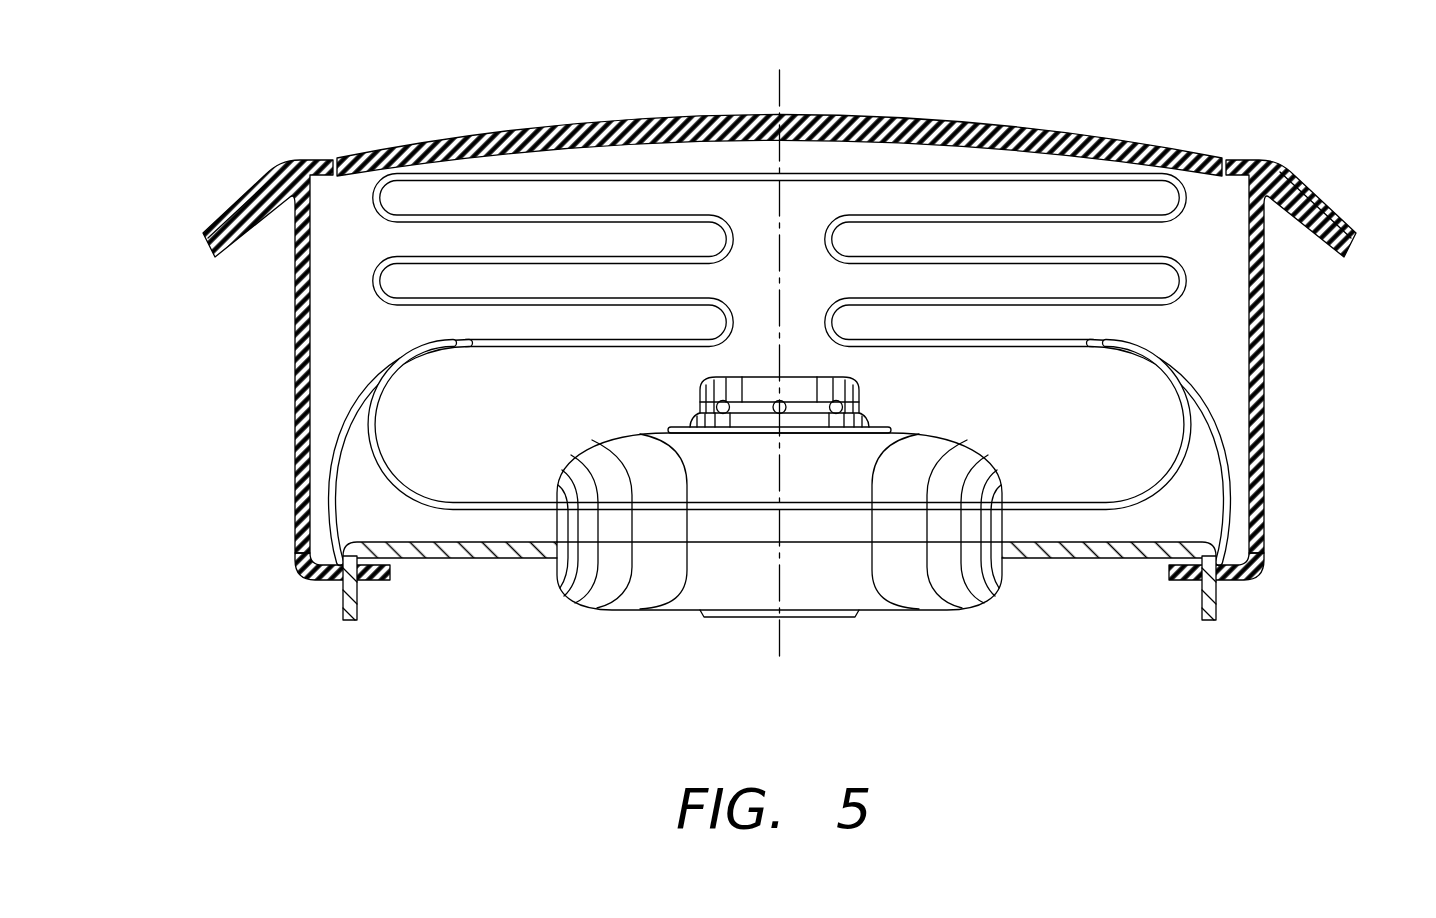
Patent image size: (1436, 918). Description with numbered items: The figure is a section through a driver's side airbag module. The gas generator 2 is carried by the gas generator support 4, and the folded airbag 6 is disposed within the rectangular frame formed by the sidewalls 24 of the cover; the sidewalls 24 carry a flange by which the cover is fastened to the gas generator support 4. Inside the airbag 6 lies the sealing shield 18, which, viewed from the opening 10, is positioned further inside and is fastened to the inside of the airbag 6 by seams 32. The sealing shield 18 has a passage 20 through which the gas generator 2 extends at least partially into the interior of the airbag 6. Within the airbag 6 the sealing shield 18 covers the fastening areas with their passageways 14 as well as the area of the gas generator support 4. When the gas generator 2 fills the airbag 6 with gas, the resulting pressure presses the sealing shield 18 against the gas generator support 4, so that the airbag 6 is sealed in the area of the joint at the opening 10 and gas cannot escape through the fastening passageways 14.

The gas generator 2 is at (805, 560).
The gas generator support 4 is at (527, 560).
The airbag 6 is at (855, 173).
The opening 10 is at (395, 562).
The passageways 14 is at (293, 546).
The sealing shield 18 is at (1035, 512).
The passage 20 is at (560, 508).
The sidewalls 24 is at (293, 479).
The seams 32 is at (368, 398).